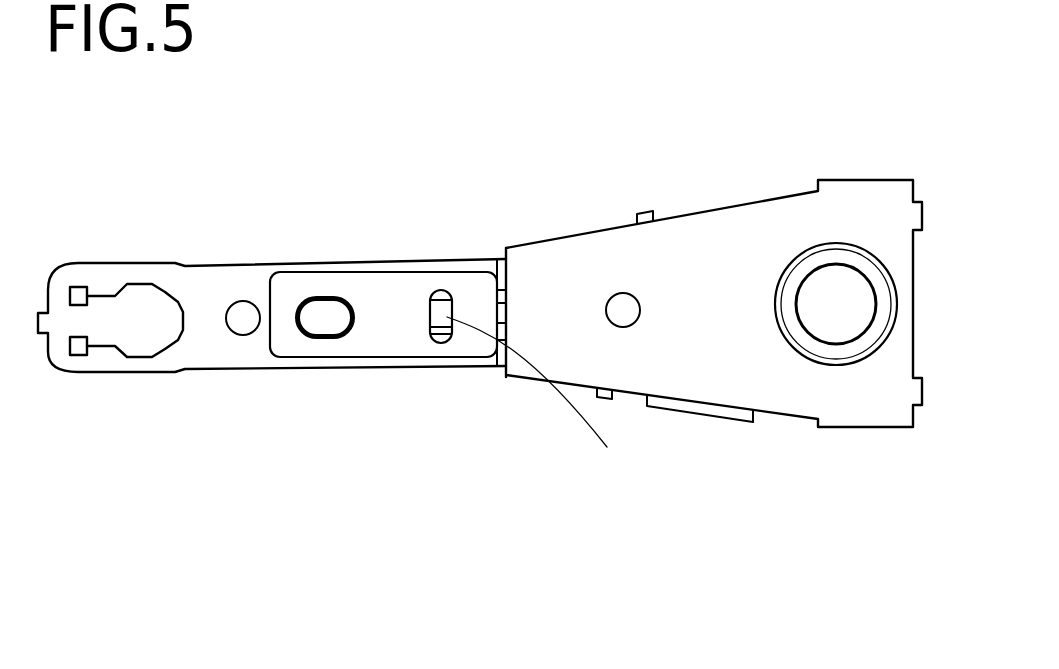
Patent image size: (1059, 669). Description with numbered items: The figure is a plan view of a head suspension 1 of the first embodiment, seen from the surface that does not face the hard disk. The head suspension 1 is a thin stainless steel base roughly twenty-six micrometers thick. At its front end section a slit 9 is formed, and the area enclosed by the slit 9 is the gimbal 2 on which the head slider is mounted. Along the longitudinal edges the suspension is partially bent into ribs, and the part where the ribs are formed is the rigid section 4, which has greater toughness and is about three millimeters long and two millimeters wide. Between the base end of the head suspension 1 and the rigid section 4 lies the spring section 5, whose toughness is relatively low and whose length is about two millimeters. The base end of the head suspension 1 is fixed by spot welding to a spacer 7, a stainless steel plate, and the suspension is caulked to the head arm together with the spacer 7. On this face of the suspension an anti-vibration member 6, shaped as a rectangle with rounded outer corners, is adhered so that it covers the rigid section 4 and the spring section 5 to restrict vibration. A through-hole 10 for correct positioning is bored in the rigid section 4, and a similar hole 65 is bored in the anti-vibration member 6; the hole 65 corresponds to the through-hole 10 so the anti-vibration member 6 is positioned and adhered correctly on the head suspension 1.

The head suspension 1 is at (243, 281).
The gimbal 2 is at (140, 298).
The rigid section 4 is at (255, 352).
The spring section 5 is at (483, 362).
The anti-vibration member 6 is at (393, 287).
The spacer 7 is at (693, 233).
The slit 9 is at (103, 283).
The through-hole 10 is at (330, 322).
The hole 65 is at (328, 340).